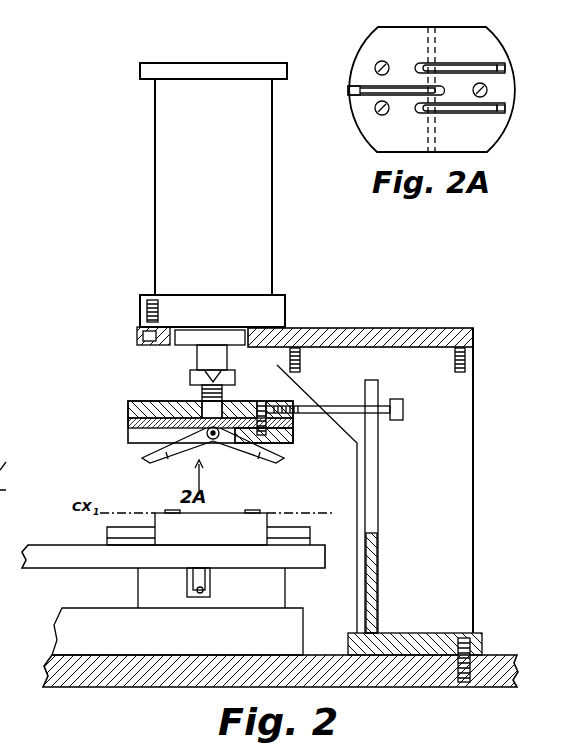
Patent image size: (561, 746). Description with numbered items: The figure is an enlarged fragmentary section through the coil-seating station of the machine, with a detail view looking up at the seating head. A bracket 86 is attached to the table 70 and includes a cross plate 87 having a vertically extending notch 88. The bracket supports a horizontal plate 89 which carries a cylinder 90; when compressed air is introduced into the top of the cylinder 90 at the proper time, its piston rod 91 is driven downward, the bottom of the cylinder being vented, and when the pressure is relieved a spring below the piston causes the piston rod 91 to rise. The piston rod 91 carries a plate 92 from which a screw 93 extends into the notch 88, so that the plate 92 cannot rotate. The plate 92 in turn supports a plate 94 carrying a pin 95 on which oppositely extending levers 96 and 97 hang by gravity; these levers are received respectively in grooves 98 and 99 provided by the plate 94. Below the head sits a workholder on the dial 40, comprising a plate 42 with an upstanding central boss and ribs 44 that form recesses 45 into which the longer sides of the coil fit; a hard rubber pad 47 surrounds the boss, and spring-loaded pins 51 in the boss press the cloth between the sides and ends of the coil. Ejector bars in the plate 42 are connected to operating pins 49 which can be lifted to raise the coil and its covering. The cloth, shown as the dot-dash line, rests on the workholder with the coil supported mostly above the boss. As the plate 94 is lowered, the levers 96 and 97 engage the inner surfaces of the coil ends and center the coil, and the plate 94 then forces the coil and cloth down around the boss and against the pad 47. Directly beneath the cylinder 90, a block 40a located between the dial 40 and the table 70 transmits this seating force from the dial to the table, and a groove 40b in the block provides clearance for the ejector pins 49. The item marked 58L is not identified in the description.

In FIG. 2, the cylinder 90 is at (273, 207).
In FIG. 2, the piston rod 91 is at (198, 360).
In FIG. 2, the plate 92 is at (147, 401).
In FIG. 2, the screw 93 is at (344, 408).
In FIG. 2, the plate 94 is at (295, 435).
In FIG. 2A, the plate 94 is at (487, 142).
In FIG. 2, the pin 95 is at (213, 440).
In FIG. 2, the lever 96 is at (176, 462).
In FIG. 2A, the lever 96 is at (362, 91).
In FIG. 2, the lever 97 is at (258, 462).
In FIG. 2A, the lever 97 is at (490, 69).
In FIG. 2A, the groove 98 is at (348, 90).
In FIG. 2A, the groove 99 is at (505, 68).
In FIG. 2A, the recesses 45 is at (436, 135).
In FIG. 2, the horizontal plate 89 is at (380, 327).
In FIG. 2, the notch 88 is at (375, 470).
In FIG. 2, the cross plate 87 is at (378, 548).
In FIG. 2, the bracket 86 is at (475, 507).
In FIG. 2, the table 70 is at (495, 660).
In FIG. 2, the dial 40 is at (45, 558).
In FIG. 2, the block 40a is at (142, 588).
In FIG. 2, the groove 40b is at (190, 597).
In FIG. 2, the operating pin 49 is at (207, 590).
In FIG. 2, the plate 42 is at (108, 544).
In FIG. 2, the ribs 44 is at (214, 521).
In FIG. 2, the pad 47 is at (132, 526).
In FIG. 2, the pins 51 is at (257, 512).
In FIG. 2, the left stop 58L is at (0, 442).